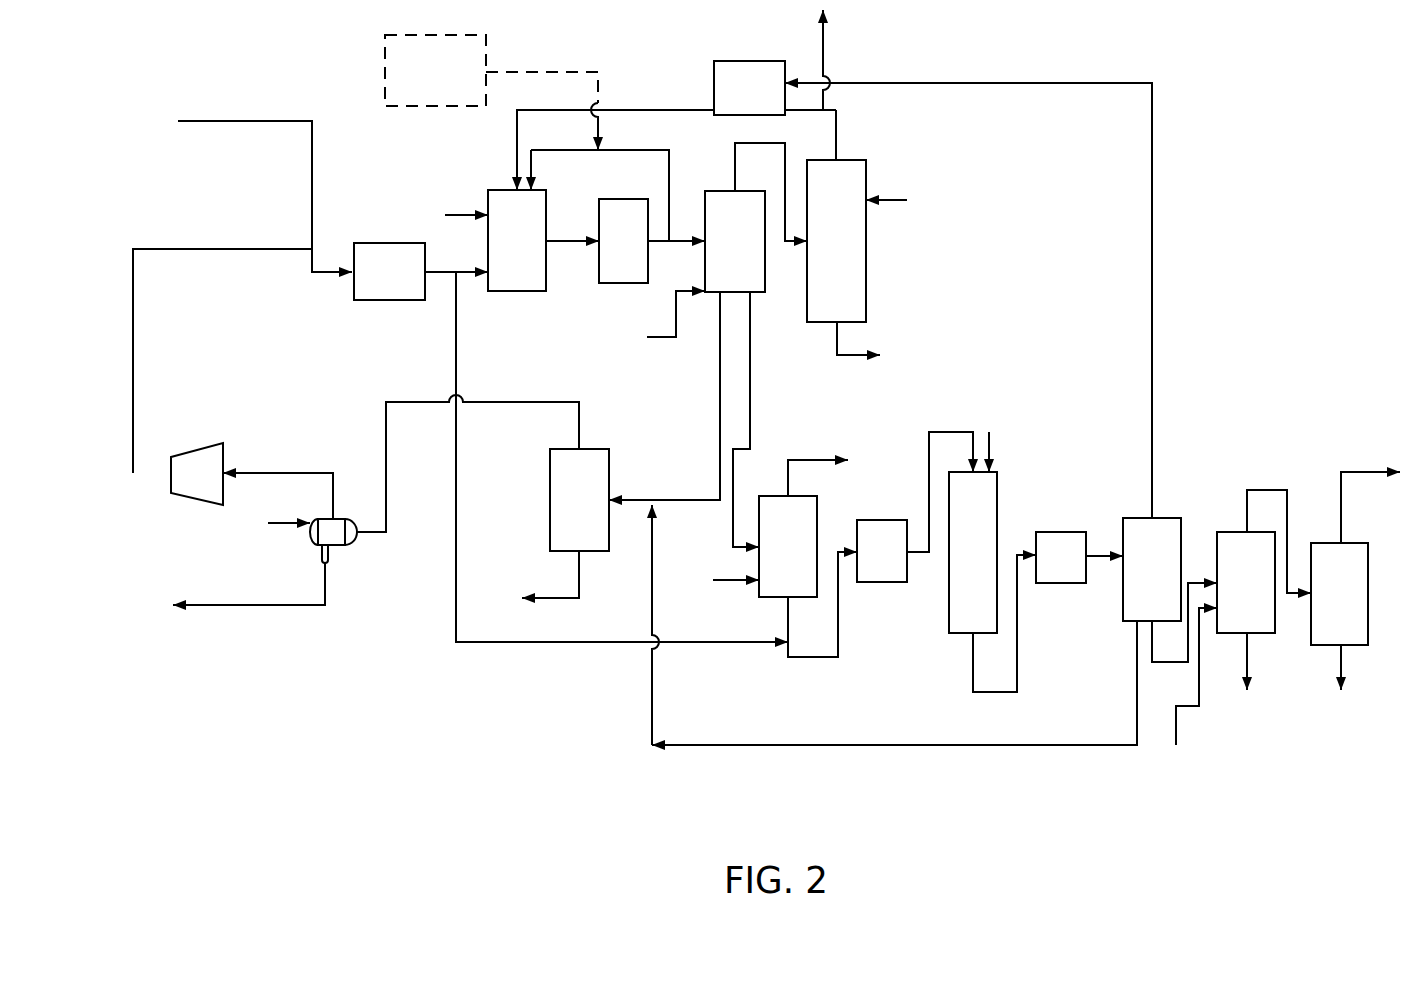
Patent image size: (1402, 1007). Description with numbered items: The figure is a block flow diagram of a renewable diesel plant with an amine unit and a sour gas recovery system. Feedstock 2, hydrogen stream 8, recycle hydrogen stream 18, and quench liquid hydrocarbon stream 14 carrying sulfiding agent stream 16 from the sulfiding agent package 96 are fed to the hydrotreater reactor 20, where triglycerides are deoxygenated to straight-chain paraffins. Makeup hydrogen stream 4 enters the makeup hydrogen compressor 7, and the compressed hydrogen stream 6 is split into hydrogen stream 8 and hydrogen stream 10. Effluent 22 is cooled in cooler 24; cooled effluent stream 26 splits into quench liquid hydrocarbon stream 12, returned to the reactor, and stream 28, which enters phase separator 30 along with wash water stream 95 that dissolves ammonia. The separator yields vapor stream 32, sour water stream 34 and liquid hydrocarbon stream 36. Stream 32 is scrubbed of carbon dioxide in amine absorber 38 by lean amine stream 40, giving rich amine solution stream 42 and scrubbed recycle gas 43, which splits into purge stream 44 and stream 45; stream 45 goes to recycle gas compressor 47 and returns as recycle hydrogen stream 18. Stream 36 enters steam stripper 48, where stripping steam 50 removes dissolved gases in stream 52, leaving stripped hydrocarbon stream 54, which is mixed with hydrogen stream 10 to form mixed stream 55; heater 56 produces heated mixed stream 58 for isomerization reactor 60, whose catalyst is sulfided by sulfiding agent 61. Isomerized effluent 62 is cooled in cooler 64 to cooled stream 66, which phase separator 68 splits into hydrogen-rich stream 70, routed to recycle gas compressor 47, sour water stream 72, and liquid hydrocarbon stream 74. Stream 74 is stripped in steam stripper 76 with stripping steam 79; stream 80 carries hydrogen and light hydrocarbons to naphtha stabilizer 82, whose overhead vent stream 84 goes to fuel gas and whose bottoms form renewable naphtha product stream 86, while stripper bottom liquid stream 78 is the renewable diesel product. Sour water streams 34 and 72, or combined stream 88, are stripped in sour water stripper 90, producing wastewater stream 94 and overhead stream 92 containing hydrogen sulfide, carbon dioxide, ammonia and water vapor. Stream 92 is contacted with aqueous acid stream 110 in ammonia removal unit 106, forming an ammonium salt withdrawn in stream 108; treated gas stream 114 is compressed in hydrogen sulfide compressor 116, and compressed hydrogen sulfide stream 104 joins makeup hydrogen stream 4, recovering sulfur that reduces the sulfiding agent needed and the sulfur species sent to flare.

The feedstock 2 is at (445, 208).
The hydrogen stream 4 is at (240, 112).
The compressed hydrogen stream 6 is at (437, 250).
The makeup hydrogen compressor 7 is at (390, 236).
The hydrogen stream 8 is at (462, 280).
The hydrogen stream 10 is at (450, 460).
The quench liquid hydrocarbon stream 12 is at (632, 148).
The quench liquid hydrocarbon stream 14 is at (573, 147).
The sulfiding agent stream 16 is at (545, 65).
The recycle H2 stream 18 is at (660, 105).
The hydrotreater reactor 20 is at (487, 183).
The effluent 22 is at (585, 212).
The cooler 24 is at (613, 193).
The cooled effluent stream 26 is at (655, 248).
The stream 28 is at (677, 250).
The phase separator 30 is at (720, 185).
The stream 32 is at (732, 158).
The stream 34 is at (713, 372).
The stream 36 is at (760, 360).
The amine absorber 38 is at (878, 255).
The stream 40 is at (900, 180).
The rich amine solution stream 42 is at (875, 340).
The scrubbed recycle gas 43 is at (841, 130).
The purge stream 44 is at (828, 63).
The stream 45 is at (792, 113).
The recycle gas compressor 47 is at (730, 58).
The steam stripper 48 is at (782, 488).
The stripping steam 50 is at (723, 575).
The stream 52 is at (822, 440).
The stripped hydrocarbon stream 54 is at (780, 625).
The mixed stream 55 is at (810, 662).
The heater 56 is at (873, 512).
The heated mixed stream 58 is at (941, 427).
The isomerization reactor 60 is at (945, 595).
The sulfiding agent 61 is at (998, 436).
The isomerized effluent 62 is at (995, 700).
The cooler 64 is at (1050, 525).
The cooled stream 66 is at (1100, 548).
The phase separator 68 is at (1137, 515).
The stream 70 is at (1146, 300).
The stream 72 is at (893, 738).
The stream 74 is at (1158, 672).
The steam stripper 76 is at (1233, 527).
The stripper bottom liquid stream 78 is at (1252, 672).
The stripping steam 79 is at (1205, 700).
The stream 80 is at (1262, 482).
The naphtha stabilizer 82 is at (1330, 510).
The overhead vent stream 84 is at (1370, 455).
The renewable naphtha product stream 86 is at (1345, 672).
The combined stream 88 is at (640, 475).
The sour water stripper 90 is at (602, 423).
The stream 92 is at (550, 395).
The wastewater stream 94 is at (553, 592).
The wash water stream 95 is at (652, 340).
The sulfiding agent package 96 is at (403, 28).
The compressed H2S stream 104 is at (128, 360).
The ammonia removal unit 106 is at (355, 548).
The stream 108 is at (243, 603).
The aqueous acid stream 110 is at (292, 518).
The treated gas stream 114 is at (300, 465).
The H2S compressor 116 is at (195, 505).